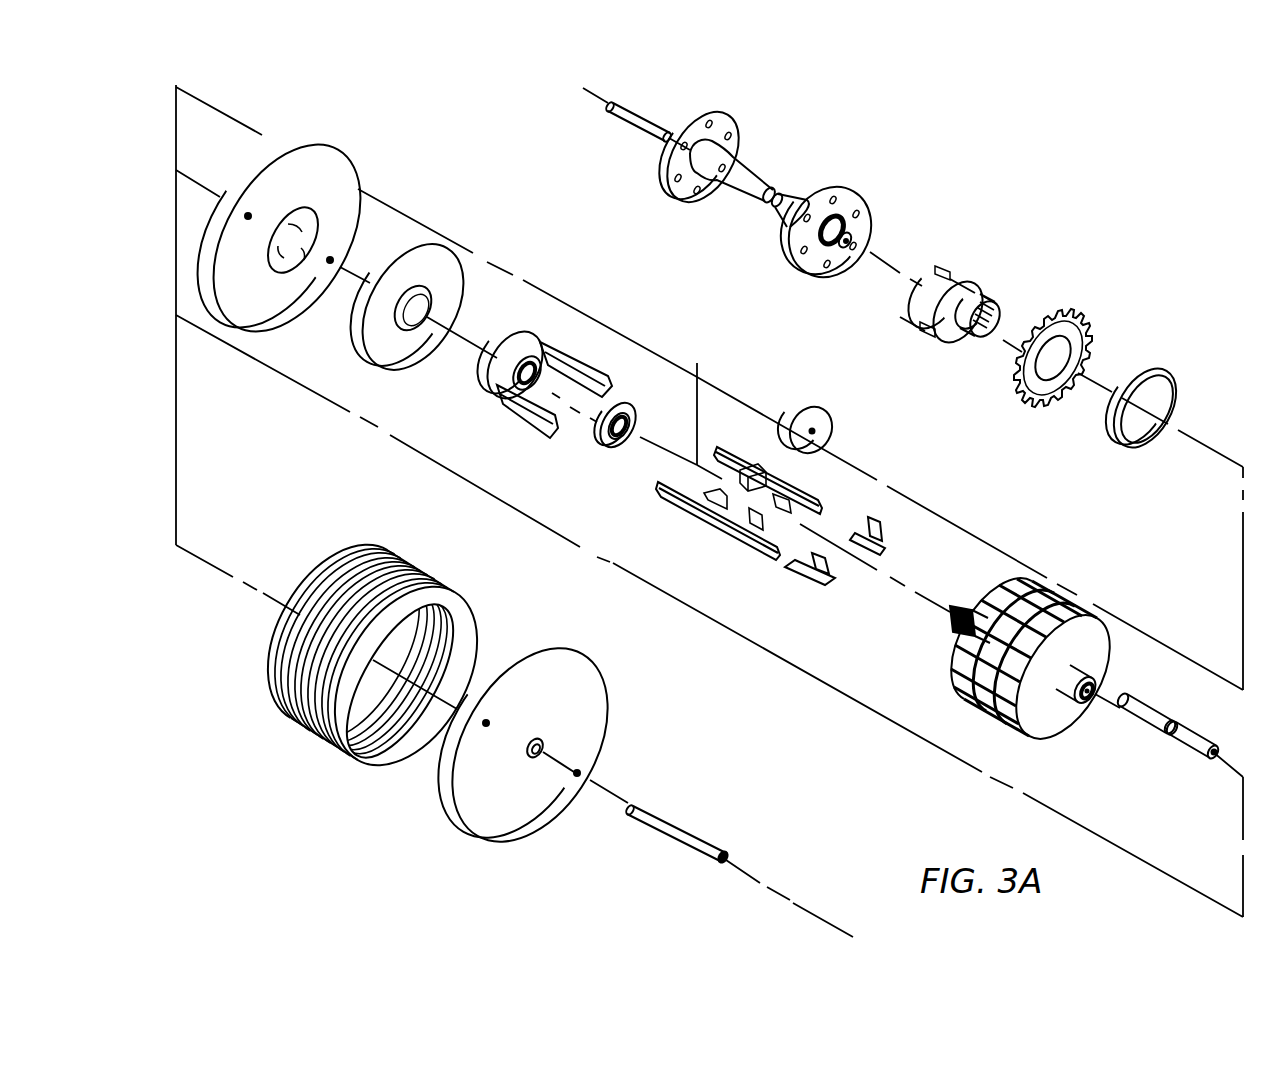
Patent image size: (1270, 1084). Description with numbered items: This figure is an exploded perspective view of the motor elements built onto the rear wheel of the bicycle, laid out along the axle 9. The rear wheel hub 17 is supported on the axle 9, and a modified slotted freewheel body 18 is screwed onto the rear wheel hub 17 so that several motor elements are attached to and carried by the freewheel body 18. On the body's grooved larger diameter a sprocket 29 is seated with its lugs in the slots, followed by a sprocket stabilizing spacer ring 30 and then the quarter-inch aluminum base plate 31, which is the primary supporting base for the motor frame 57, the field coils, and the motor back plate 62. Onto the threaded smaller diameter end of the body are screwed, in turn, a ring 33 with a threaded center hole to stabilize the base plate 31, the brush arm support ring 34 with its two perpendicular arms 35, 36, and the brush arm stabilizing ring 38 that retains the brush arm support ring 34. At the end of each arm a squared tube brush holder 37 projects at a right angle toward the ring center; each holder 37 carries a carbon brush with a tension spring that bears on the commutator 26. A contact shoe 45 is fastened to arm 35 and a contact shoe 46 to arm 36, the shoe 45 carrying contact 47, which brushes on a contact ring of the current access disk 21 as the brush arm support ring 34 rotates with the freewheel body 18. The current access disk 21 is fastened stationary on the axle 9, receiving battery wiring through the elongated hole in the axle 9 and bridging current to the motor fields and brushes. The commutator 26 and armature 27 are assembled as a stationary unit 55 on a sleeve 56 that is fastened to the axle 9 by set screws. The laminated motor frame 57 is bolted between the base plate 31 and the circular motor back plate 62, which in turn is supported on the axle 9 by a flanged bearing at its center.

The axle 9 is at (630, 105).
The rear wheel hub 17 is at (840, 185).
The freewheel body 18 is at (975, 280).
The current access disk 21 is at (836, 407).
The commutator 26 is at (973, 607).
The armature 27 is at (1107, 680).
The sprocket 29 is at (1085, 320).
The sprocket stabilizing spacer ring 30 is at (1158, 378).
The base plate 31 is at (343, 157).
The ring 33 is at (450, 250).
The brush arm support ring 34 is at (552, 324).
The arm 35 is at (796, 486).
The arm 36 is at (712, 527).
The squared tube brush holder 37 is at (832, 594).
The brush arm stabilizing ring 38 is at (633, 412).
The contact shoe 45 is at (772, 468).
The contact shoe 46 is at (692, 504).
The contact 47 is at (760, 487).
The commutator and armature unit 55 is at (944, 688).
The sleeve 56 is at (1197, 742).
The motor frame 57 is at (467, 597).
The motor back plate 62 is at (612, 722).